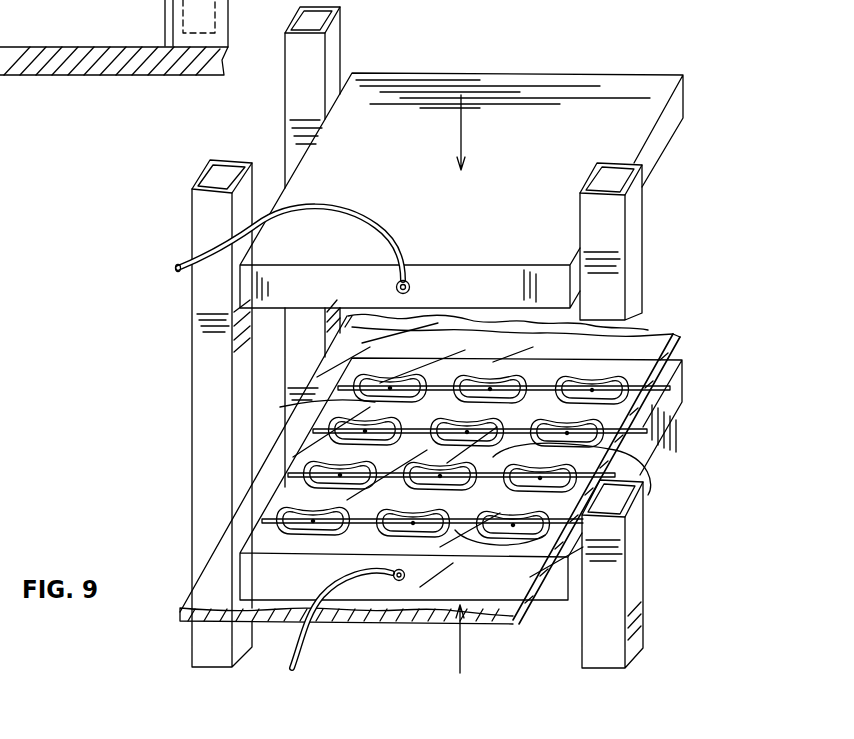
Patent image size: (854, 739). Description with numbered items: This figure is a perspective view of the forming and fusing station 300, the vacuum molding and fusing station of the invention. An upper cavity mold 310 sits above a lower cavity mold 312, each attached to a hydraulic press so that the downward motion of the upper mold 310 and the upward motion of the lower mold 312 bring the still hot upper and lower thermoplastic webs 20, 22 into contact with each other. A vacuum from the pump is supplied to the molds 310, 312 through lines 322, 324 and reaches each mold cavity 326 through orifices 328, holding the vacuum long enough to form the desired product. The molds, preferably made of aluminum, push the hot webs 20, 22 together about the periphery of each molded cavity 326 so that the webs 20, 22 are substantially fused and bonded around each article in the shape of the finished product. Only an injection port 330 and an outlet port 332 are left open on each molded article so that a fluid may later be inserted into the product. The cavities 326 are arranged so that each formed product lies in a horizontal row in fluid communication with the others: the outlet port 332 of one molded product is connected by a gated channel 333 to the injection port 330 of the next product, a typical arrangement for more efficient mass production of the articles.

The forming and fusing station 300 is at (555, 66).
The upper cavity mold 310 is at (323, 192).
The lower cavity mold 312 is at (270, 586).
The vacuum line 322 is at (203, 251).
The vacuum line 324 is at (309, 640).
The mold cavity 326 is at (555, 396).
The orifice 328 is at (545, 537).
The injection port 330 is at (615, 483).
The outlet port 332 is at (608, 334).
The gated channel 333 is at (372, 440).
The upper thermoplastic web 20 is at (512, 591).
The lower thermoplastic web 22 is at (485, 623).